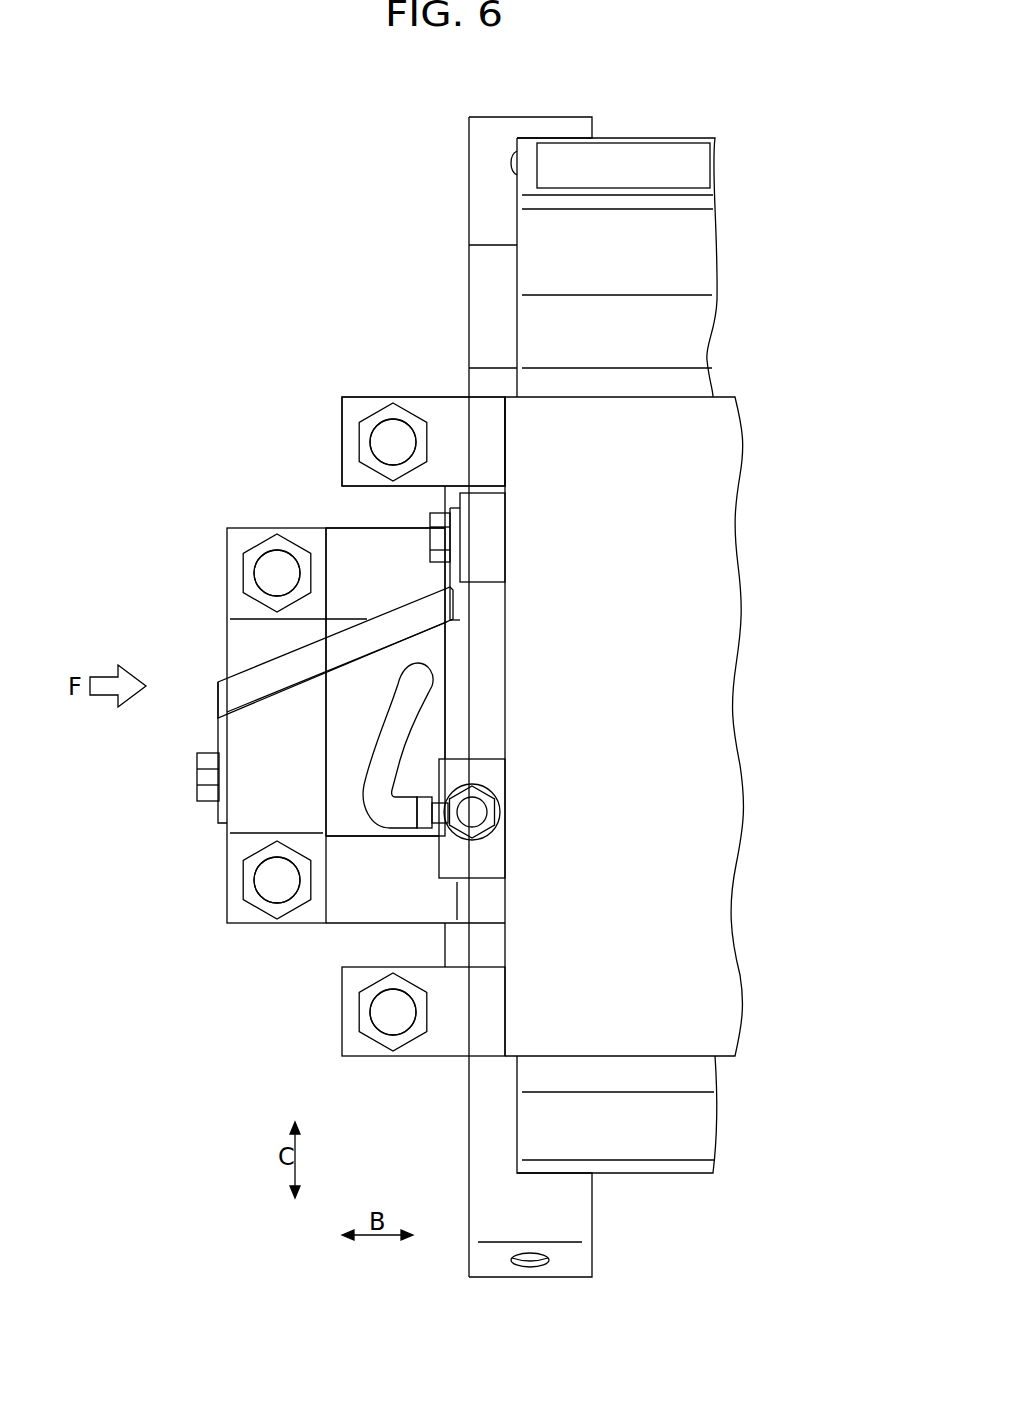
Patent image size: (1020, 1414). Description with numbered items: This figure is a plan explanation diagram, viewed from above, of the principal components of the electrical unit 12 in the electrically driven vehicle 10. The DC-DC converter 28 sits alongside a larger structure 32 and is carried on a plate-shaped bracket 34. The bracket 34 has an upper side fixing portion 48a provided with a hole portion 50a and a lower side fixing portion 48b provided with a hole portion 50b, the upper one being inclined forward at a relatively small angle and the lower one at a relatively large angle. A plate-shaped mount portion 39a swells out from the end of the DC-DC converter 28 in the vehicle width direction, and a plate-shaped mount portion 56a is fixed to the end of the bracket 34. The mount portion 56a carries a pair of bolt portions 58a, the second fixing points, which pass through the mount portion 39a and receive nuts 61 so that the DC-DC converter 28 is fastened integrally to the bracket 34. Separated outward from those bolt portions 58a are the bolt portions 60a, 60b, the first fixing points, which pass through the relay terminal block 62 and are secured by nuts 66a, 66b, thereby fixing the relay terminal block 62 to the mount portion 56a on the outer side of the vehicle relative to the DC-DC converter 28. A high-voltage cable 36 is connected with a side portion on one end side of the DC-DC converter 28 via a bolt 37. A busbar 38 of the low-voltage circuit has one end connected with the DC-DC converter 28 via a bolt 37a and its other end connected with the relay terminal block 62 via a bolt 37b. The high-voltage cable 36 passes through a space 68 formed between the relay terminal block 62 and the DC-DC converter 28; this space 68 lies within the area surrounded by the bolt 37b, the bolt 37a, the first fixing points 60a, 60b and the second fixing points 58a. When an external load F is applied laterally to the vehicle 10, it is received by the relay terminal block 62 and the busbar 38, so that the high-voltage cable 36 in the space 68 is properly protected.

The electrically driven vehicle 10 is at (313, 170).
The fixing device 12 is at (277, 170).
The DC-DC converter 28 is at (740, 412).
The mounting member 32 is at (716, 252).
The bracket 34 is at (466, 136).
The high-voltage cable 36 is at (377, 804).
The bolt 37 is at (478, 813).
The bolt 37a is at (430, 520).
The bolt 37b is at (205, 773).
The busbar 38 is at (232, 692).
The mount portion 39a is at (440, 415).
The upper side fixing portion 48a is at (568, 128).
The lower side fixing portion 48b is at (478, 1261).
The hole portion 50a is at (510, 163).
The hole portion 50b is at (532, 1267).
The mount portion 56a is at (410, 350).
The bolt portion 58a is at (388, 432).
The bolt portion 60a is at (270, 563).
The bolt portion 60b is at (272, 893).
The nut 61 is at (360, 435).
The relay terminal block 62 is at (226, 642).
The nut 66a is at (245, 572).
The nut 66b is at (243, 885).
The space 68 is at (348, 723).